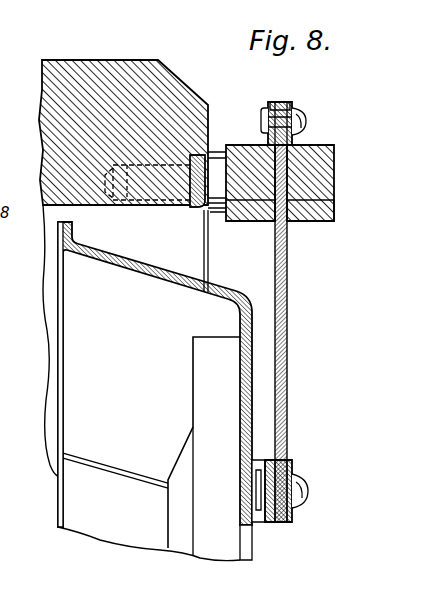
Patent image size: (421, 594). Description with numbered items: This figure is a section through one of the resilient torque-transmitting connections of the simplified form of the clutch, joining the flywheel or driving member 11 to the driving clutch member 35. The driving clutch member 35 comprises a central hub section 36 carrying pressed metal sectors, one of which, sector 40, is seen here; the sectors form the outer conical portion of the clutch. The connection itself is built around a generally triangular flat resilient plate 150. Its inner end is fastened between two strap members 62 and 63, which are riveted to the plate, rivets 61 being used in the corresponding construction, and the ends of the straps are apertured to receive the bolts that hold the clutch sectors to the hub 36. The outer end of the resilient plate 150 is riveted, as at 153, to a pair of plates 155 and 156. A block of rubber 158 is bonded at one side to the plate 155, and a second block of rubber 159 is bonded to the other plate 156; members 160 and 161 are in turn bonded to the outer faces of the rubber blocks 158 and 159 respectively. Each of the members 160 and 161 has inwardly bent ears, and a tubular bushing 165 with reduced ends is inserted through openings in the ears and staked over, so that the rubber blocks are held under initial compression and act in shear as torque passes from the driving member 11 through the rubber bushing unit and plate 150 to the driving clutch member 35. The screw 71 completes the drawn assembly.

The driving member 11 is at (96, 70).
The screw 71 is at (148, 200).
The tubular bushing 165 is at (208, 225).
The member 160 is at (236, 147).
The member 161 is at (335, 181).
The block of rubber 158 is at (256, 222).
The second block of rubber 159 is at (310, 222).
The resilient plate 150 is at (280, 102).
The plate 155 is at (268, 104).
The plate 156 is at (292, 108).
The rivet 153 is at (307, 122).
The pressed metal sector 40 is at (256, 355).
The central hub section 36 is at (190, 371).
The driving clutch member 35 is at (56, 500).
The strap member 63 is at (270, 460).
The strap member 62 is at (293, 466).
The rivet 61 is at (309, 492).